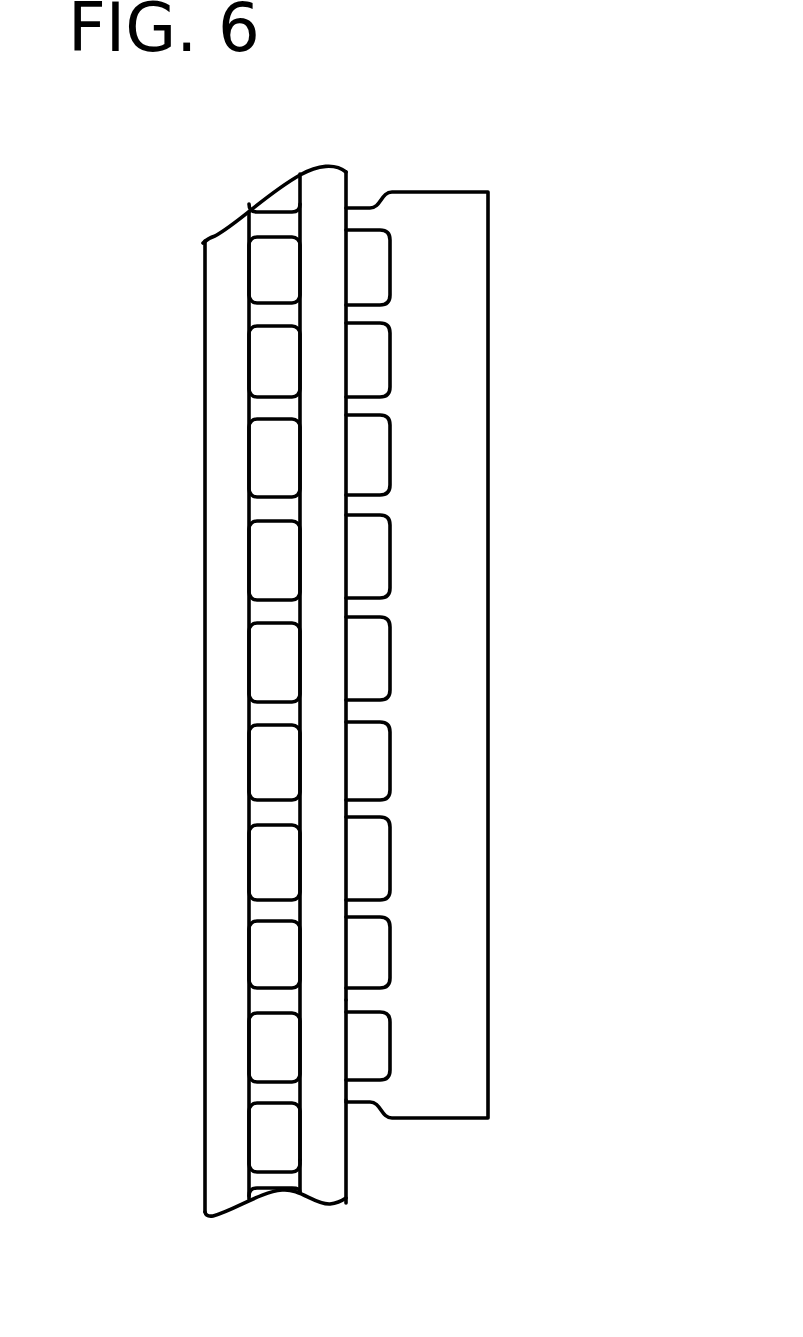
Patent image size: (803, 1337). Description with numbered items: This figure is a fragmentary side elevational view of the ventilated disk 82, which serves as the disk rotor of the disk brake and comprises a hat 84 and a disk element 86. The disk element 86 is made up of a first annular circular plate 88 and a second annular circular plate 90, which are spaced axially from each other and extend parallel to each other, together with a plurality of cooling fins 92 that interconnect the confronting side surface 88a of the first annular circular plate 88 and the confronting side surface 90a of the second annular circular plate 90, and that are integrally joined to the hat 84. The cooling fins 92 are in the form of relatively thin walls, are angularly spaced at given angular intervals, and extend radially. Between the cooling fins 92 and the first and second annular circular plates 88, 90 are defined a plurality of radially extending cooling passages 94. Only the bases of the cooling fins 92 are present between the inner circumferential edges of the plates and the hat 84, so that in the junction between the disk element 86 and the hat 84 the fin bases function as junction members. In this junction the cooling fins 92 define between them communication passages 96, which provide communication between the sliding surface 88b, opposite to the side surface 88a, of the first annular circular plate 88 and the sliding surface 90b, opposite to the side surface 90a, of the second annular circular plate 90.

The ventilated disk 82 is at (645, 152).
The hat 84 is at (473, 515).
The disk element 86 is at (193, 542).
The first annular circular plate 88 is at (213, 742).
The side surface of the first annular circular plate 88a is at (251, 964).
The sliding surface of the first annular circular plate 88b is at (203, 647).
The second annular circular plate 90 is at (330, 873).
The side surface of the second annular circular plate 90a is at (306, 1140).
The sliding surface of the second annular circular plate 90b is at (347, 1042).
The cooling fins 92 is at (263, 407).
The cooling passages 94 is at (263, 540).
The communication passages 96 is at (363, 557).